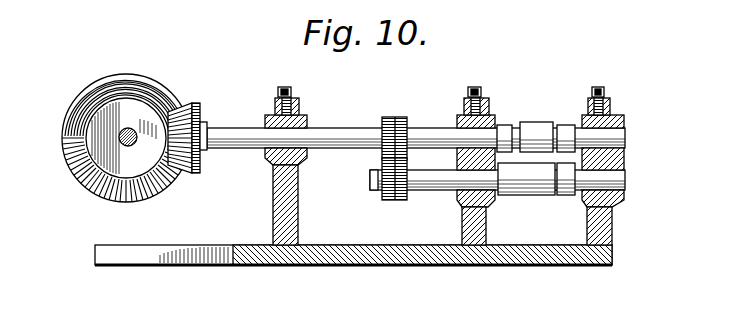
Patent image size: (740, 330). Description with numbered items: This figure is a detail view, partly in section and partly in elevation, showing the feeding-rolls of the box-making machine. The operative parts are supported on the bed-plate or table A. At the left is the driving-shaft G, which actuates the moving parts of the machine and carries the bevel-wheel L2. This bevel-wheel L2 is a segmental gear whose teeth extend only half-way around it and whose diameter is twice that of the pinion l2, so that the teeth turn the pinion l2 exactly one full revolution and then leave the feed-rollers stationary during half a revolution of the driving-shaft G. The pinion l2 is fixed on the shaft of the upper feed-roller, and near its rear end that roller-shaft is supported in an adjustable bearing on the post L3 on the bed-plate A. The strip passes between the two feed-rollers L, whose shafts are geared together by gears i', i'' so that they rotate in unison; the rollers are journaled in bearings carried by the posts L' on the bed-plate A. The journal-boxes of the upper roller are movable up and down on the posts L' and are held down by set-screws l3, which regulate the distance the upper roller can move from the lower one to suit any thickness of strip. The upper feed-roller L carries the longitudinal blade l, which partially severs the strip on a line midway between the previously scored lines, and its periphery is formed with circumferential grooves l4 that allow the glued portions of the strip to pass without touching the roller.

The bed-plate or table A is at (353, 266).
The bevel-wheel L2 is at (123, 74).
The pinion l2 is at (191, 102).
The driving-shaft G is at (132, 142).
The post L3 is at (298, 200).
The posts L' is at (543, 171).
The set-screws l3 is at (284, 87).
The gear wheel i' is at (394, 127).
The gear wheel i'' is at (392, 190).
The circumferential depressions or grooves l4 is at (516, 125).
The feed-rollers L is at (526, 159).
The longitudinal blade l is at (565, 196).